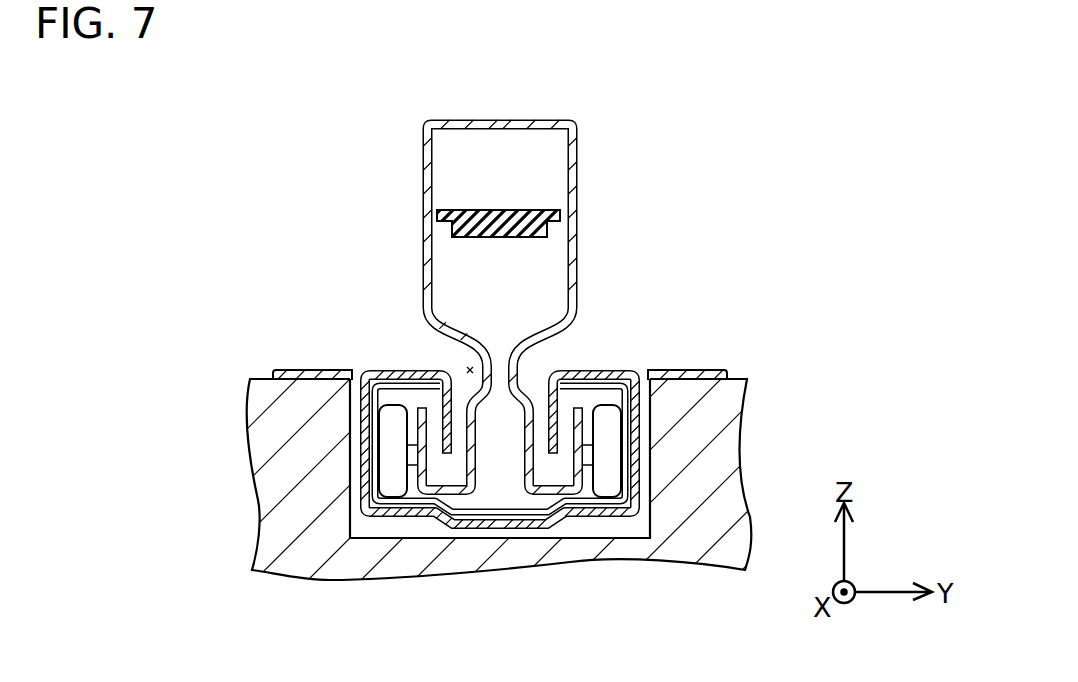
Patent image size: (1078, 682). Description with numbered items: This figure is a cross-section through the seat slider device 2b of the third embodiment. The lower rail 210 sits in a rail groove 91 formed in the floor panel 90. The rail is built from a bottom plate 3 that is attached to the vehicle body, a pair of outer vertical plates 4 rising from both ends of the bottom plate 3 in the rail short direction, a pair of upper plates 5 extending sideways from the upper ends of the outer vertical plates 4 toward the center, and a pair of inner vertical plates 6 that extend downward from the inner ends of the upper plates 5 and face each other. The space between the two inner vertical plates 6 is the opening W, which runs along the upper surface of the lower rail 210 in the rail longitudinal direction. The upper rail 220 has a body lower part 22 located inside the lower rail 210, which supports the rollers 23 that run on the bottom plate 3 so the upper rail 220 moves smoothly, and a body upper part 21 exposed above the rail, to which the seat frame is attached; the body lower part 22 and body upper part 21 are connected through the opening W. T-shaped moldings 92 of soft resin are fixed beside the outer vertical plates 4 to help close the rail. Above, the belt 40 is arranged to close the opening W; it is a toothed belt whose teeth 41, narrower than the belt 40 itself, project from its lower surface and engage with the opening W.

The seat slider device 2b is at (292, 103).
The body upper part 21 is at (516, 120).
The upper rail 220 is at (545, 352).
The belt 40 is at (530, 212).
The teeth 41 is at (518, 233).
The opening W is at (470, 367).
The T-shaped molding 92 is at (302, 378).
The upper plate 5 is at (380, 383).
The inner vertical plate 6 is at (445, 393).
The floor panel 90 is at (725, 442).
The outer vertical plate 4 is at (362, 465).
The roller 23 is at (380, 497).
The lower rail 210 is at (368, 518).
The rail groove 91 is at (418, 528).
The body lower part 22 is at (472, 470).
The bottom plate 3 is at (497, 461).